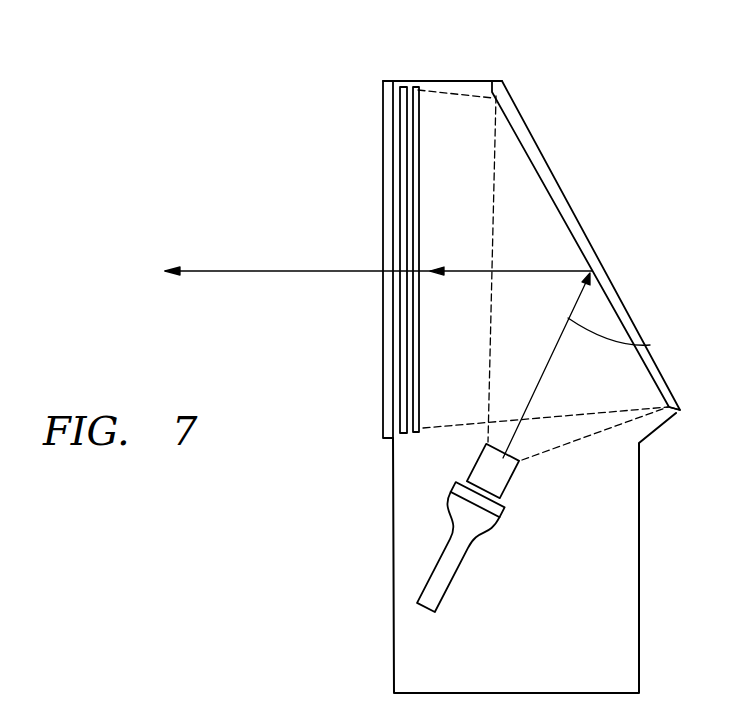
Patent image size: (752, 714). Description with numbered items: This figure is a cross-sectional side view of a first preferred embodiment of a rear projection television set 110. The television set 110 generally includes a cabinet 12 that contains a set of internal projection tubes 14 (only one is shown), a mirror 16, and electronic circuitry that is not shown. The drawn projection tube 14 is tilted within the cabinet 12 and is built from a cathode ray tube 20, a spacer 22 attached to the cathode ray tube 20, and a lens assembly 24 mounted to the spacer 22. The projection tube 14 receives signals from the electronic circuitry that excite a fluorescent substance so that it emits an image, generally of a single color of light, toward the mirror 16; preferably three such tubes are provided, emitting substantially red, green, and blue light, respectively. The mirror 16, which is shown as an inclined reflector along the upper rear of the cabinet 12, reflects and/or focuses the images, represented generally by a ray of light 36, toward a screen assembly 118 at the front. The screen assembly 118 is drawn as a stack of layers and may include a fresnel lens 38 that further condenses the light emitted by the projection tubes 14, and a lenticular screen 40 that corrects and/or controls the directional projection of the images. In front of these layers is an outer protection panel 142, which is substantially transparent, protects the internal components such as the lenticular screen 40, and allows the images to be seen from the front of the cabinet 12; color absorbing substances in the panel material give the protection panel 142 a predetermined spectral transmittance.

The cabinet 12 is at (640, 515).
The projection tube 14 is at (407, 514).
The mirror 16 is at (620, 300).
The cathode ray tube 20 is at (435, 570).
The spacer 22 is at (458, 487).
The lens assembly 24 is at (473, 467).
The ray of light 36 is at (650, 345).
The fresnel lens 38 is at (418, 113).
The lenticular screen 40 is at (403, 88).
The rear projection television set 110 is at (602, 142).
The screen assembly 118 is at (391, 70).
The outer protection panel 142 is at (383, 93).